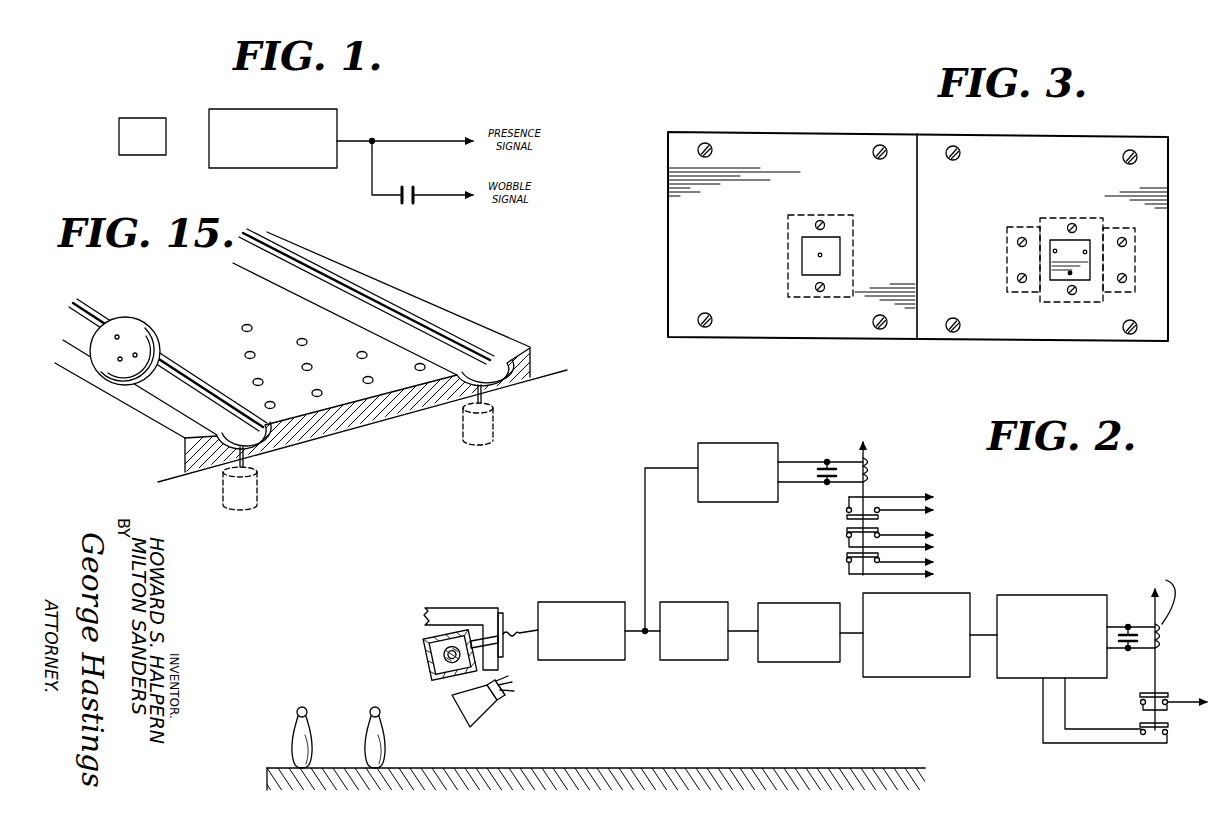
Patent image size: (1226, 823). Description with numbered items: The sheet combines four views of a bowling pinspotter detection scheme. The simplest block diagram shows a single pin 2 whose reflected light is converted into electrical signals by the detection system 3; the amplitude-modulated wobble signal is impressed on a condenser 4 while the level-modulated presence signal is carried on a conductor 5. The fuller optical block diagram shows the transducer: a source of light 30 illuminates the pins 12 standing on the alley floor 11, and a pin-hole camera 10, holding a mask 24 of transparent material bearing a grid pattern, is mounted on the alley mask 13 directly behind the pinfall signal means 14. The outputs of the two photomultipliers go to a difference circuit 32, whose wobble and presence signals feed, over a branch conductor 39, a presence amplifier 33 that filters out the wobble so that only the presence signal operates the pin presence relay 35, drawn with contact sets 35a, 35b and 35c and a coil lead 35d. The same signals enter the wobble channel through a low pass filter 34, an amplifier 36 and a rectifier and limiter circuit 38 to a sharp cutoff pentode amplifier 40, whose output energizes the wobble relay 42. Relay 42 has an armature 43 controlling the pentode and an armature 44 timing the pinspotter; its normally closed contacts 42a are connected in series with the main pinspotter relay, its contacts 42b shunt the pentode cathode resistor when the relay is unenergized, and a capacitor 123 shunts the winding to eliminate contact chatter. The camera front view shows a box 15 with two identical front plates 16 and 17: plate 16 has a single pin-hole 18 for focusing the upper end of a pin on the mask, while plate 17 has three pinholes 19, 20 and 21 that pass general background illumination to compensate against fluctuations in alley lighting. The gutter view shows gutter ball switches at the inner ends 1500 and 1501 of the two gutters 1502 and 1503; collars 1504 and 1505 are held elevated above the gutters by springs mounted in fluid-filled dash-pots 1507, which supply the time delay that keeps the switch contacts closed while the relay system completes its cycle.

In FIG. 1, the pin 2 is at (133, 118).
In FIG. 1, the detection system 3 is at (265, 109).
In FIG. 1, the condenser 4 is at (400, 200).
In FIG. 1, the conductor 5 is at (410, 141).
In FIG. 3, the box 15 is at (884, 133).
In FIG. 3, the front plate 16 is at (791, 238).
In FIG. 3, the front plate 17 is at (1048, 245).
In FIG. 3, the pin-hole 18 is at (822, 255).
In FIG. 3, the pinhole 19 is at (1055, 249).
In FIG. 3, the pinhole 20 is at (1088, 252).
In FIG. 3, the pinhole 21 is at (1070, 275).
In FIG. 15, the inner end of gutter 1500 is at (507, 382).
In FIG. 15, the inner end of gutter 1501 is at (270, 450).
In FIG. 15, the gutter 1502 is at (383, 320).
In FIG. 15, the gutter 1503 is at (168, 390).
In FIG. 15, the collar 1504 is at (495, 355).
In FIG. 15, the collar 1505 is at (238, 442).
In FIG. 15, the dash-pot 1507 is at (258, 497).
In FIG. 2, the pin-hole camera 10 is at (426, 641).
In FIG. 2, the alley floor 11 is at (574, 752).
In FIG. 2, the pins 12 is at (368, 719).
In FIG. 2, the alley mask 13 is at (479, 608).
In FIG. 2, the pinfall signal means 14 is at (503, 614).
In FIG. 2, the mask 24 is at (441, 676).
In FIG. 2, the source of light 30 is at (478, 718).
In FIG. 2, the difference circuit 32 is at (589, 602).
In FIG. 2, the presence amplifier 33 is at (716, 502).
In FIG. 2, the low pass filter 34 is at (672, 660).
In FIG. 2, the pin presence relay 35 is at (868, 479).
In FIG. 2, the relay contact 35a is at (846, 511).
In FIG. 2, the relay contact 35b is at (846, 536).
In FIG. 2, the relay contact 35c is at (846, 560).
In FIG. 2, the relay coil lead 35d is at (860, 456).
In FIG. 2, the amplifier 36 is at (780, 662).
In FIG. 2, the rectifier and limiter circuit 38 is at (900, 677).
In FIG. 2, the connection lead 39 is at (645, 548).
In FIG. 2, the sharp cutoff pentode amplifier 40 is at (1036, 582).
In FIG. 2, the wobble relay 42 is at (1164, 636).
In FIG. 2, the normally closed contacts 42a is at (1140, 699).
In FIG. 2, the normally closed contacts 42b is at (1168, 734).
In FIG. 2, the armature 43 is at (1140, 723).
In FIG. 2, the armature 44 is at (1160, 693).
In FIG. 2, the capacitor 123 is at (1146, 648).